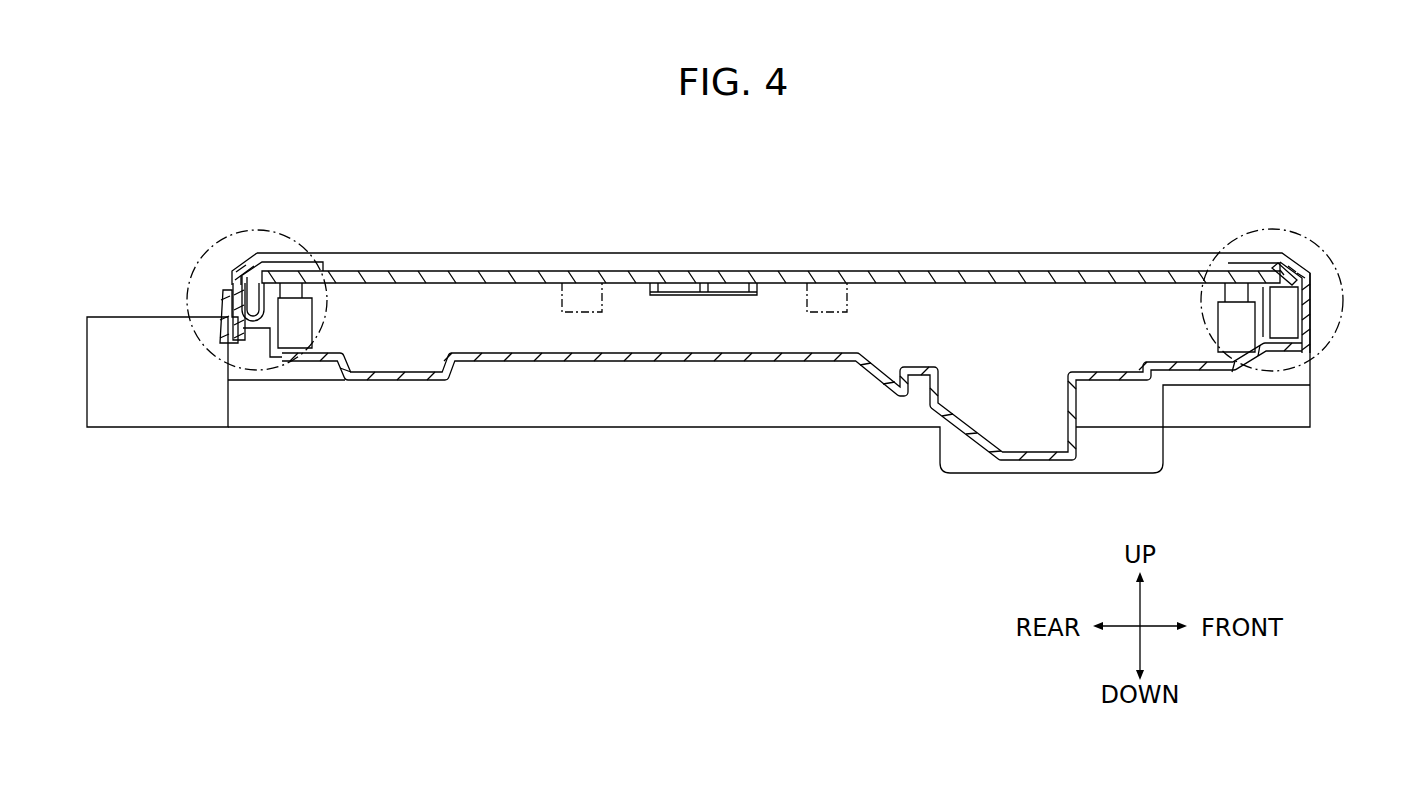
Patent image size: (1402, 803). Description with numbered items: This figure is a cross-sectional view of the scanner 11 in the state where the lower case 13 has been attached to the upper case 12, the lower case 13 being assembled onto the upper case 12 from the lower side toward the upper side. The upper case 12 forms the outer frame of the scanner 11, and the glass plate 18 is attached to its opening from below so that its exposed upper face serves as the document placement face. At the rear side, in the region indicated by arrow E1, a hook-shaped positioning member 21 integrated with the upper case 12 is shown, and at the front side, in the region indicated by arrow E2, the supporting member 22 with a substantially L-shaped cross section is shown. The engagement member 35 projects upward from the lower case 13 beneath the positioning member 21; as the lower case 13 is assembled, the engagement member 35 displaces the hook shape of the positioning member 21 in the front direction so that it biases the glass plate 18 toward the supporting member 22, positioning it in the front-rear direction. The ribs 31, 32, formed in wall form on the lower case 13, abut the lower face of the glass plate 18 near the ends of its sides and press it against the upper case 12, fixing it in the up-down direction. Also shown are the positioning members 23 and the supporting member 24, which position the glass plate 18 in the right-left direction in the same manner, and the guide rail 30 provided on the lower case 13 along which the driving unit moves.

The scanner 11 is at (1019, 224).
The upper case 12 is at (279, 264).
The lower case 13 is at (387, 383).
The glass plate 18 is at (427, 271).
The positioning member 21 is at (228, 284).
The supporting member 22 is at (1298, 275).
The positioning member 23 is at (582, 290).
The supporting member 24 is at (703, 295).
The guide rail 30 is at (913, 368).
The rib 31 is at (1258, 290).
The rib 32 is at (302, 298).
The engagement member 35 is at (225, 318).
The arrow E1 is at (211, 223).
The arrow E2 is at (1290, 221).